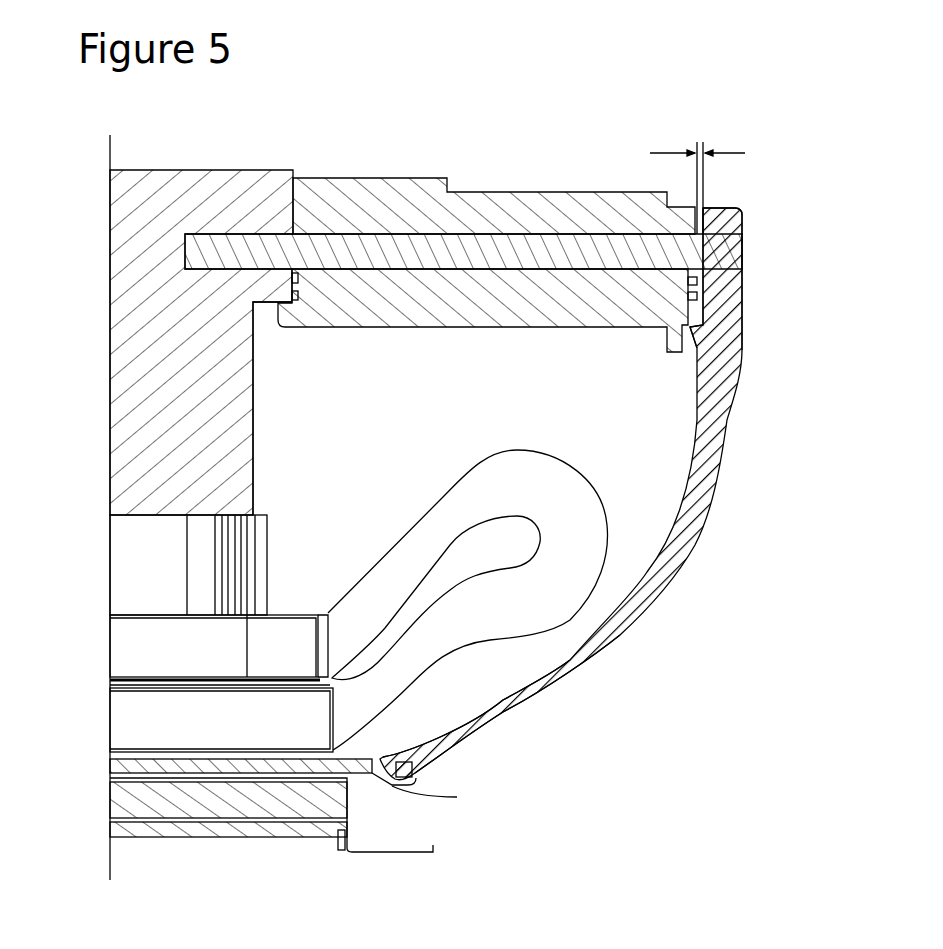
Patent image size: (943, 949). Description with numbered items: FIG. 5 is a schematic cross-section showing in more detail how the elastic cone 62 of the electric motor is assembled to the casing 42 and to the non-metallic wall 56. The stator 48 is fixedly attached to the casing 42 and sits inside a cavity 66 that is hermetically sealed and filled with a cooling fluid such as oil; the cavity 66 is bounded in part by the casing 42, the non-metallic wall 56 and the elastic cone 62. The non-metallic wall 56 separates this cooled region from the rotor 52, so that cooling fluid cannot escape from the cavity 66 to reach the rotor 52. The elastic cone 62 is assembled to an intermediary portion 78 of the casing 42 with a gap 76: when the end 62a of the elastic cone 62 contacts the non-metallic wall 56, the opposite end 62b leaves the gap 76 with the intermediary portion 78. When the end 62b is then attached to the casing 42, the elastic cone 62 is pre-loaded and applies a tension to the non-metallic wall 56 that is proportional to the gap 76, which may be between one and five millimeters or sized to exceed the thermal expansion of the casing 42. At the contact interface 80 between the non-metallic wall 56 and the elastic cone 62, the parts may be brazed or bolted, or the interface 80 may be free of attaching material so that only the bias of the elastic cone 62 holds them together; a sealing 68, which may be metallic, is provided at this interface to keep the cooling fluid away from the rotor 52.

The casing 42 is at (160, 367).
The cavity 66 is at (290, 427).
The intermediary portion 78 is at (540, 205).
The gap 76 is at (700, 140).
The elastic cone 62 is at (706, 428).
The end of the elastic cone 62b is at (725, 308).
The end of the elastic cone 62a is at (468, 718).
The sealing 68 is at (420, 757).
The contact interface 80 is at (457, 797).
The stator 48 is at (140, 716).
The non-metallic wall 56 is at (368, 775).
The rotor 52 is at (253, 795).